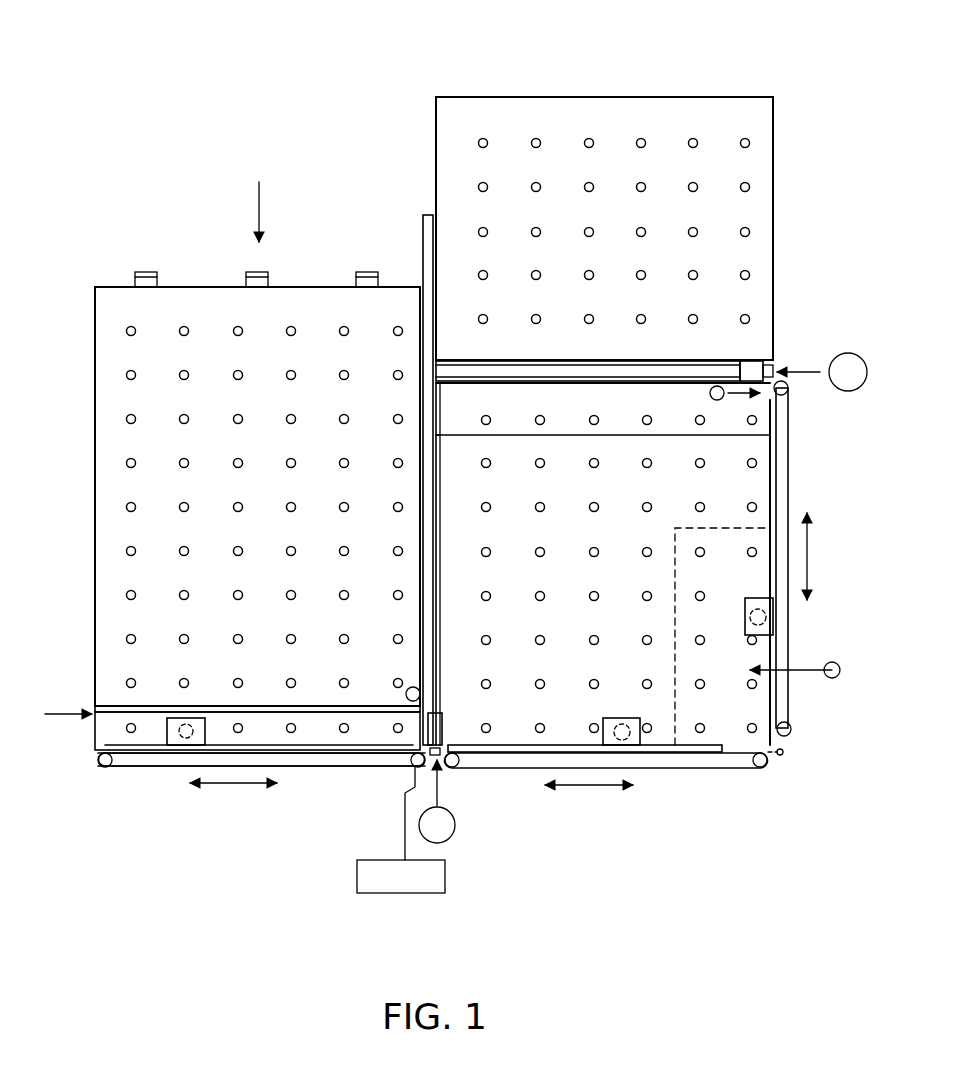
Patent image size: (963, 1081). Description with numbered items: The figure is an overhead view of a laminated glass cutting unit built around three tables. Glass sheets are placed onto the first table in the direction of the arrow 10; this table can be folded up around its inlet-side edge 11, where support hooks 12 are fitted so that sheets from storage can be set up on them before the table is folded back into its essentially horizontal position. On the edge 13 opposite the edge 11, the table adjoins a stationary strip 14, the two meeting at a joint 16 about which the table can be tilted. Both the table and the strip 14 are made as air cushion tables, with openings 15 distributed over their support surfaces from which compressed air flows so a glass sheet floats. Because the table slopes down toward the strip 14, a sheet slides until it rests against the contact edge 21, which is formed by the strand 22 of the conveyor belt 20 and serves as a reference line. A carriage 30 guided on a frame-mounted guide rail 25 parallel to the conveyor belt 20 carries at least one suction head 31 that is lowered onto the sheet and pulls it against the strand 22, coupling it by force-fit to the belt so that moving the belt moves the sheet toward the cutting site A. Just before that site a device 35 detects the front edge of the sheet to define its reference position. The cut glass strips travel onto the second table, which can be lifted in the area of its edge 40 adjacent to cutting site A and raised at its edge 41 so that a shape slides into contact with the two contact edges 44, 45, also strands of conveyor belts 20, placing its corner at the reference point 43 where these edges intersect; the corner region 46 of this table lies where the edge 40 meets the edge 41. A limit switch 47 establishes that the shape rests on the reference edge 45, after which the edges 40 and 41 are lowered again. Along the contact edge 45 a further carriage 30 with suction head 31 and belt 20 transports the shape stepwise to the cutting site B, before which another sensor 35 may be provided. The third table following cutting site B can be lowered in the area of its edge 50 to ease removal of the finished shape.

The arrow 10 is at (257, 203).
The inlet-side edge 11 is at (296, 286).
The support hooks 12 is at (143, 272).
The edge 13 is at (97, 706).
The stationary strip 14 is at (113, 729).
The openings 15 is at (136, 552).
The joint 16 is at (53, 714).
The conveyor belt 20 is at (292, 768).
The contact edge 21 is at (253, 747).
The strand 22 is at (303, 755).
The guide rail 25 is at (350, 755).
The carriage 30 is at (176, 746).
The suction head 31 is at (195, 726).
The device 35 is at (407, 691).
The edge 40 is at (440, 552).
The edge 41 is at (562, 437).
The reference point 43 is at (783, 756).
The contact edge 44 is at (517, 748).
The contact edge 45 is at (775, 487).
The corner guide 46 is at (440, 437).
The limit switch 47 is at (800, 665).
The edge 50 is at (575, 97).
The cutting site A is at (406, 826).
The cutting site B is at (651, 372).